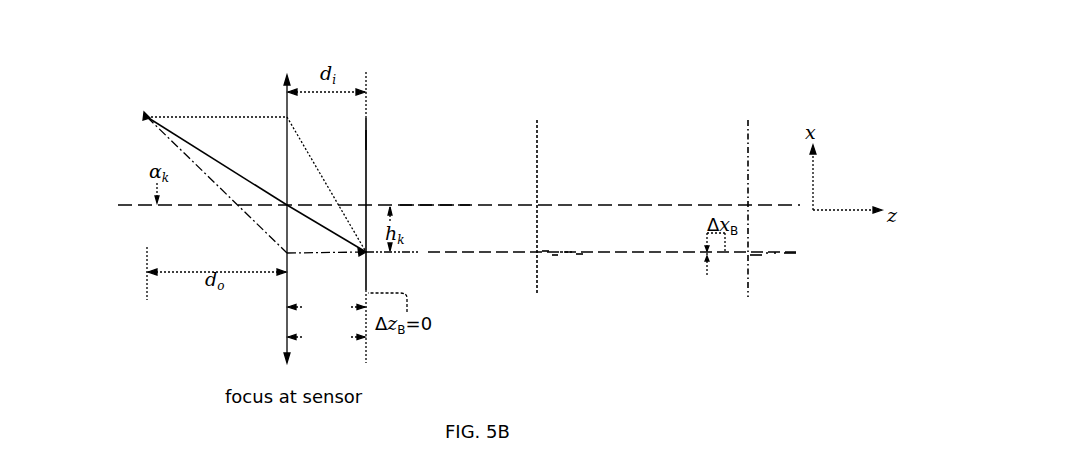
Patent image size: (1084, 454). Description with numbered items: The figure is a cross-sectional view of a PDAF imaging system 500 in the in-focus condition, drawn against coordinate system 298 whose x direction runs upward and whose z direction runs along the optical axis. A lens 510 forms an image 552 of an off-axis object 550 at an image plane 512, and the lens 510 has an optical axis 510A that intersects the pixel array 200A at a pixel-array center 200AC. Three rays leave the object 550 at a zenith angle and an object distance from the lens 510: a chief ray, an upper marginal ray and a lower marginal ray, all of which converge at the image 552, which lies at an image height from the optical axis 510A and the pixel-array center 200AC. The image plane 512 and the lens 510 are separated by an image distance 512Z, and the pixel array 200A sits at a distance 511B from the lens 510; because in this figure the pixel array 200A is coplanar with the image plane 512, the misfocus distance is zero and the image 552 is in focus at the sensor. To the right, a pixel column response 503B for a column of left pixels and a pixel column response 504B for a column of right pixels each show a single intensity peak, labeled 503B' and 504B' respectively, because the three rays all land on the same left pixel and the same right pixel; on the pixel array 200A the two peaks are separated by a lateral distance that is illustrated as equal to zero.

The PDAF imaging system 500 is at (166, 62).
The off-axis object 550 is at (143, 112).
The lens 510 is at (287, 97).
The image plane 512 is at (366, 110).
The pixel array 200A is at (366, 140).
The pixel-array center 200AC is at (370, 203).
The optical axis 510A is at (423, 207).
The image 552 is at (362, 258).
The image distance 512Z is at (326, 308).
The distance 511B is at (326, 338).
The pixel column response 503B is at (564, 188).
The image of first reference plane 503B' is at (541, 298).
The pixel column response 504B is at (775, 189).
The image of second reference plane 504B' is at (753, 299).
The coordinate system 298 is at (870, 260).